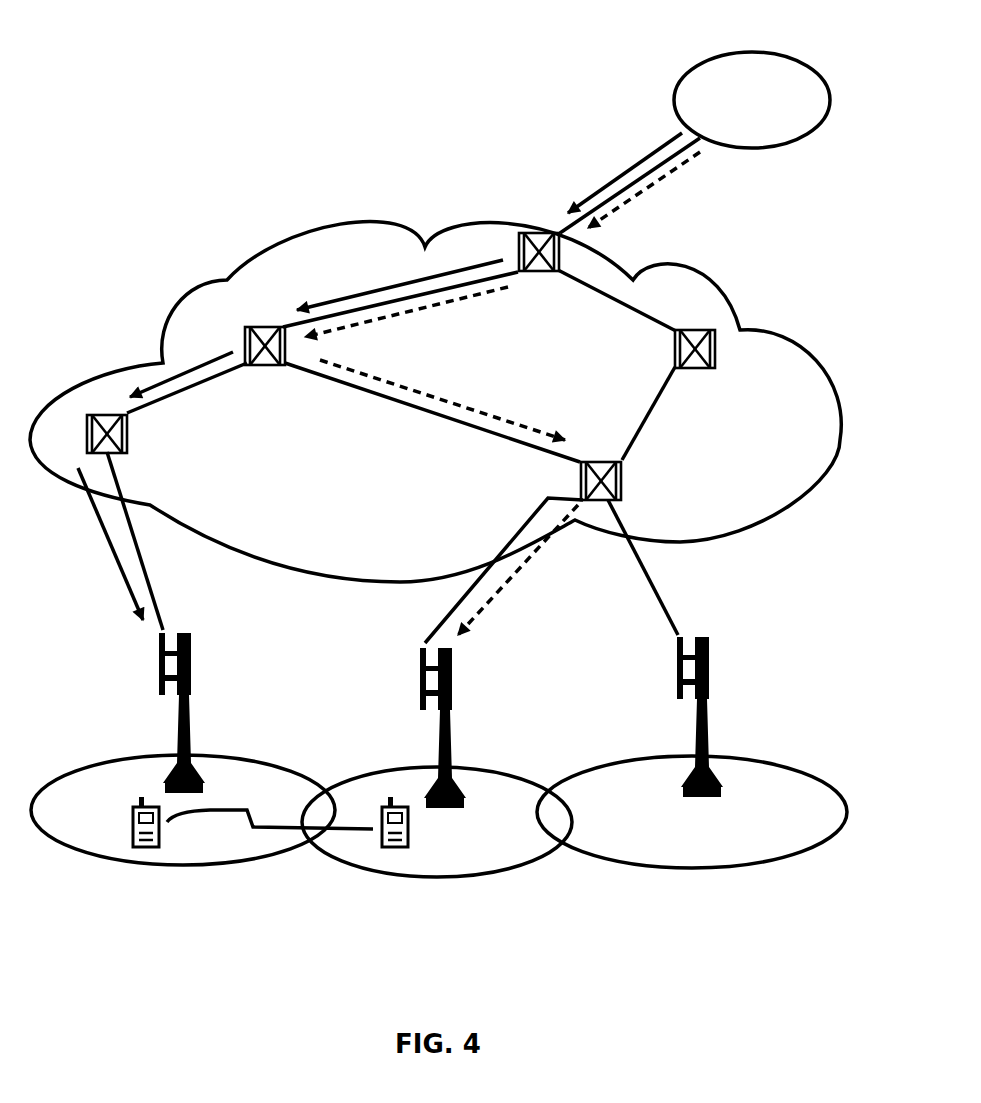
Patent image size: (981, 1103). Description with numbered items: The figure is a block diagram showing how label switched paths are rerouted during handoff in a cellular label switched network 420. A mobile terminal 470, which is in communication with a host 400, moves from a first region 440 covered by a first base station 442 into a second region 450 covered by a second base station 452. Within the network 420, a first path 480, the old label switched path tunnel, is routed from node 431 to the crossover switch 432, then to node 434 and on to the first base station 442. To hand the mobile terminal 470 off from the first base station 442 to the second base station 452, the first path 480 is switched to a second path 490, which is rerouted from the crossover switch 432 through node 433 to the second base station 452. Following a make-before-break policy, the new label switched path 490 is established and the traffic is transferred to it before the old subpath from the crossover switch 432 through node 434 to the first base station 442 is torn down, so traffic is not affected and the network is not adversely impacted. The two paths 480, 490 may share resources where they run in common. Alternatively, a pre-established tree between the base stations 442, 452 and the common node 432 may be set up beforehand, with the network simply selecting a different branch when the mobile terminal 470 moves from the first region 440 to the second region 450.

The host 400 is at (722, 55).
The cellular label switched network 420 is at (362, 222).
The node 431 is at (538, 233).
The crossover switch 432 is at (258, 327).
The node 433 is at (622, 485).
The node 434 is at (110, 415).
The first region 440 is at (135, 858).
The first base station 442 is at (188, 743).
The second region 450 is at (452, 877).
The second base station 452 is at (450, 740).
The mobile terminal 470 is at (270, 827).
The first path 480 is at (620, 178).
The second path 490 is at (653, 182).